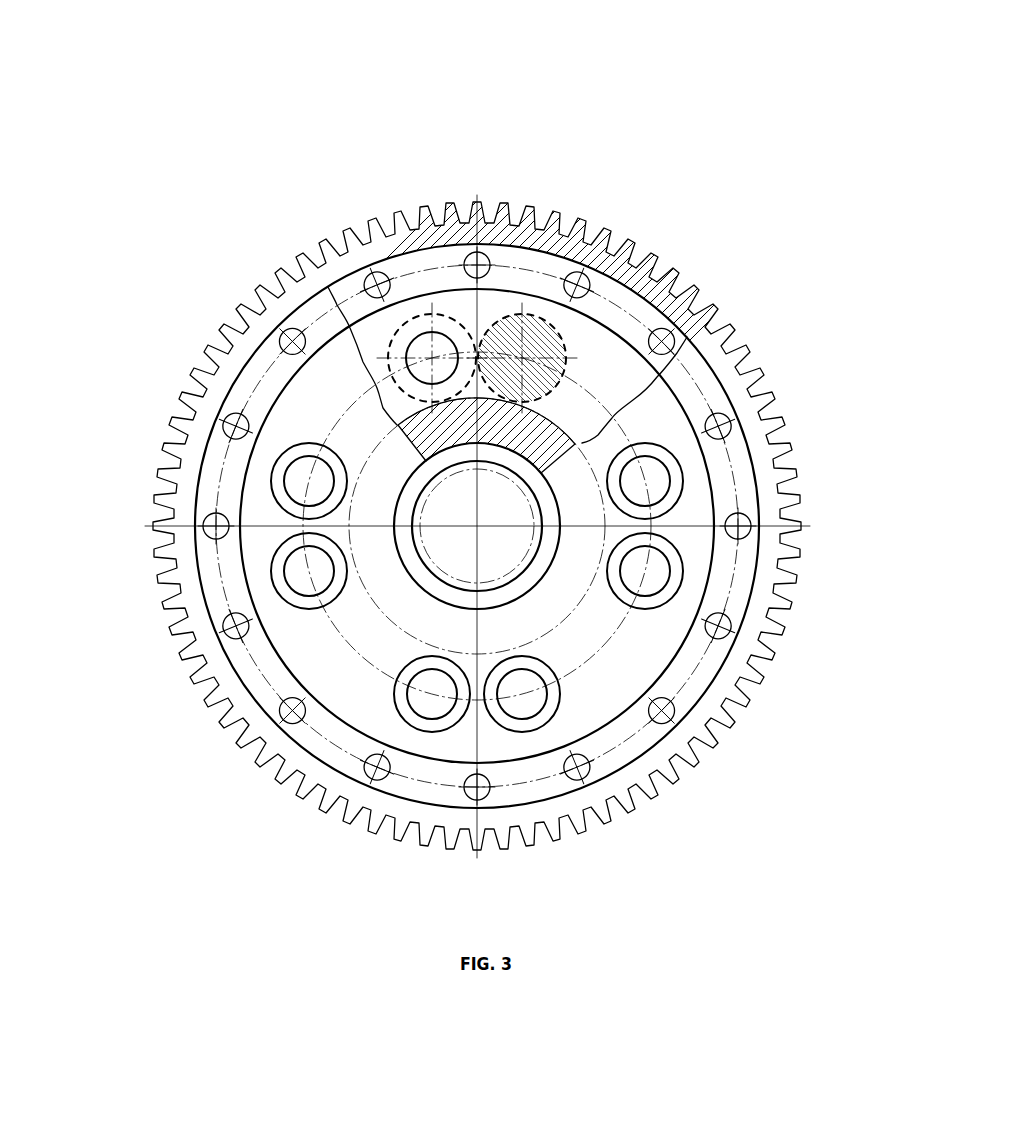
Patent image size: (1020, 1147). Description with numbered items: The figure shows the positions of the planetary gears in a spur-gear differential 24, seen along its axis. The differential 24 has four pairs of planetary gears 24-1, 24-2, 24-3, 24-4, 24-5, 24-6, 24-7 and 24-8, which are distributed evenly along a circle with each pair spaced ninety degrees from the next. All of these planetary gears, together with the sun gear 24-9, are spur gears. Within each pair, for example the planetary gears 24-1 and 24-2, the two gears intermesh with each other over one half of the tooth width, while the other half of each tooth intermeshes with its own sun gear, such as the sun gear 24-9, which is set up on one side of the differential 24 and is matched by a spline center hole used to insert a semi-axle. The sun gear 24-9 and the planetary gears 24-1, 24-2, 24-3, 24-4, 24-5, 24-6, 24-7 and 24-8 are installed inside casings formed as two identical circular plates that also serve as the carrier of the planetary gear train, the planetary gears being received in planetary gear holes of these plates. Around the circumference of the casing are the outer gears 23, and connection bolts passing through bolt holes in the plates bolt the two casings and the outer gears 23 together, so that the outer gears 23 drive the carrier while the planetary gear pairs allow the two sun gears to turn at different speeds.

The differential 24 is at (468, 72).
The outer gears 23 is at (425, 222).
The planetary gear 24-1 is at (705, 200).
The planetary gear 24-2 is at (532, 350).
The planetary gear 24-3 is at (658, 478).
The planetary gear 24-4 is at (658, 570).
The planetary gear 24-5 is at (512, 705).
The planetary gear 24-6 is at (427, 705).
The planetary gear 24-7 is at (297, 570).
The planetary gear 24-8 is at (297, 478).
The sun gear 24-9 is at (397, 425).